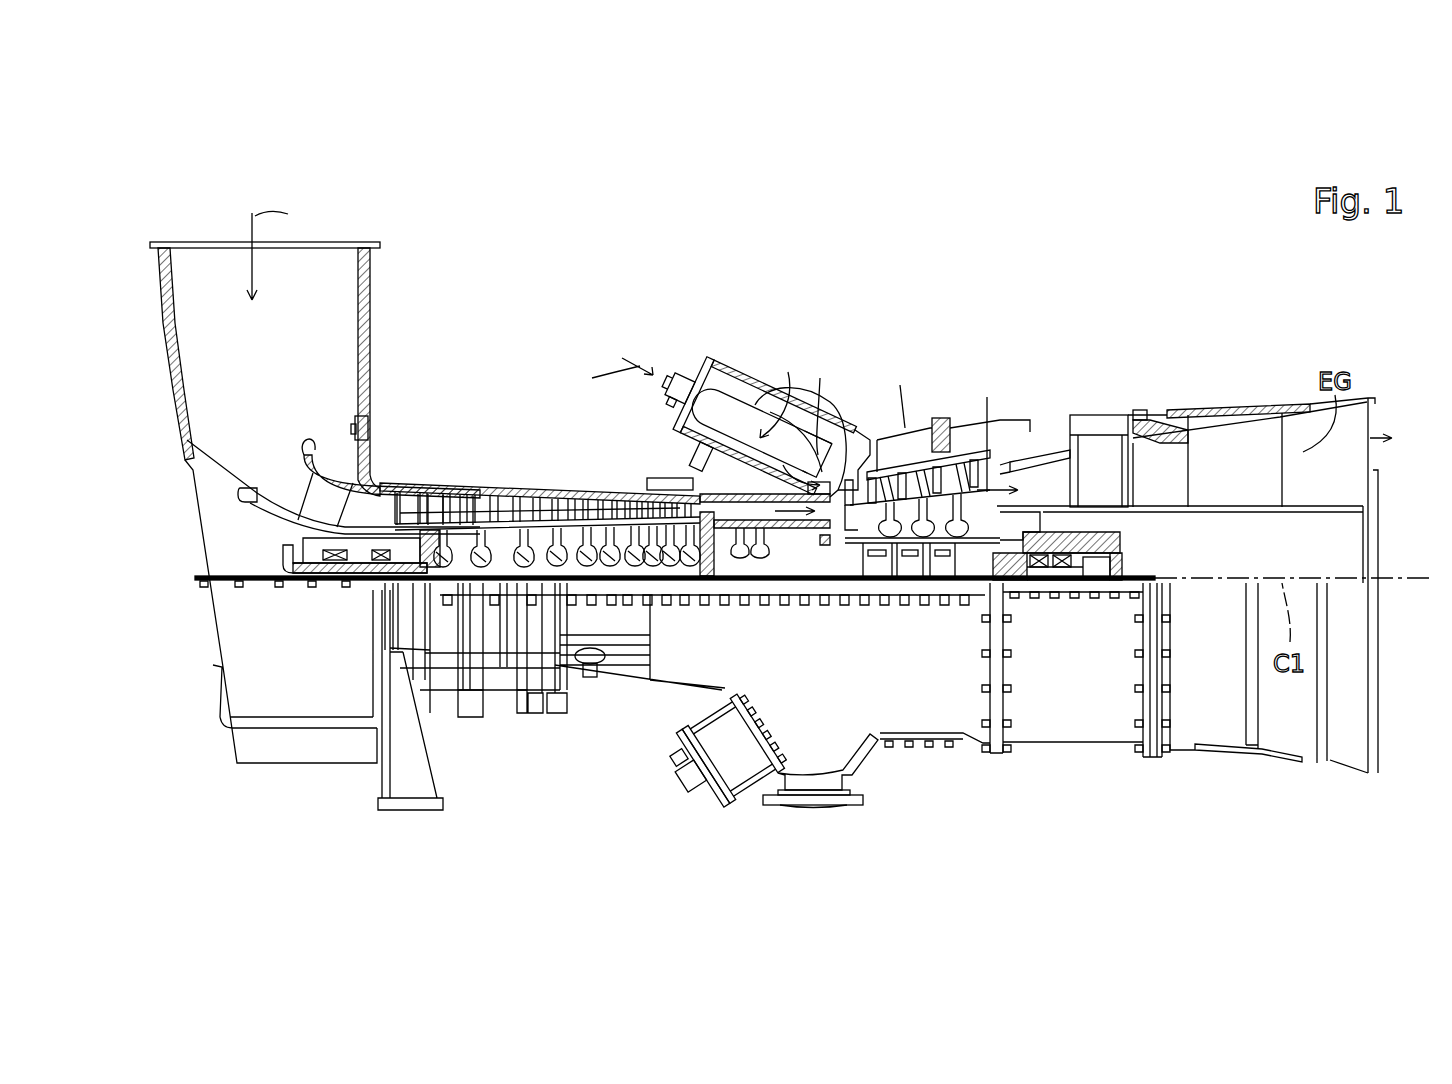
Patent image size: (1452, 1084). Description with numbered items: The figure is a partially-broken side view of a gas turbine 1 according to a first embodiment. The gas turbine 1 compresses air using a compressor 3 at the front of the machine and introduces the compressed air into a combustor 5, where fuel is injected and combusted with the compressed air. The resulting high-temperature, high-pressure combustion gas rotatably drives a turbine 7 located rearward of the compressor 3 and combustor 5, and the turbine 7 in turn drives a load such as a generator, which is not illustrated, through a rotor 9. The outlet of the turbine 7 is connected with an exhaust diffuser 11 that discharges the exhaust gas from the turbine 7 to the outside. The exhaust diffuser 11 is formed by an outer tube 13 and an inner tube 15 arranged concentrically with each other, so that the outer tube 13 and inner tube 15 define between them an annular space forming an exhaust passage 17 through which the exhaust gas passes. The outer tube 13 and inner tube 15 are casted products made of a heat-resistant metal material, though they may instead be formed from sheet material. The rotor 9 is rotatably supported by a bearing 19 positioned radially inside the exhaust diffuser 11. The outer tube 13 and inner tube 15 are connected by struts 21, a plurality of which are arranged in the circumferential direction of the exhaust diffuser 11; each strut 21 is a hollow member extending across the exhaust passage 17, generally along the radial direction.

The gas turbine 1 is at (1203, 298).
The compressor 3 is at (552, 724).
The combustor 5 is at (670, 430).
The turbine 7 is at (910, 457).
The rotor 9 is at (1022, 585).
The exhaust diffuser 11 is at (1034, 444).
The outer tube 13 is at (1165, 440).
The inner tube 15 is at (1170, 504).
The exhaust passage 17 is at (1167, 483).
The bearing 19 is at (1088, 582).
The strut 21 is at (1063, 440).